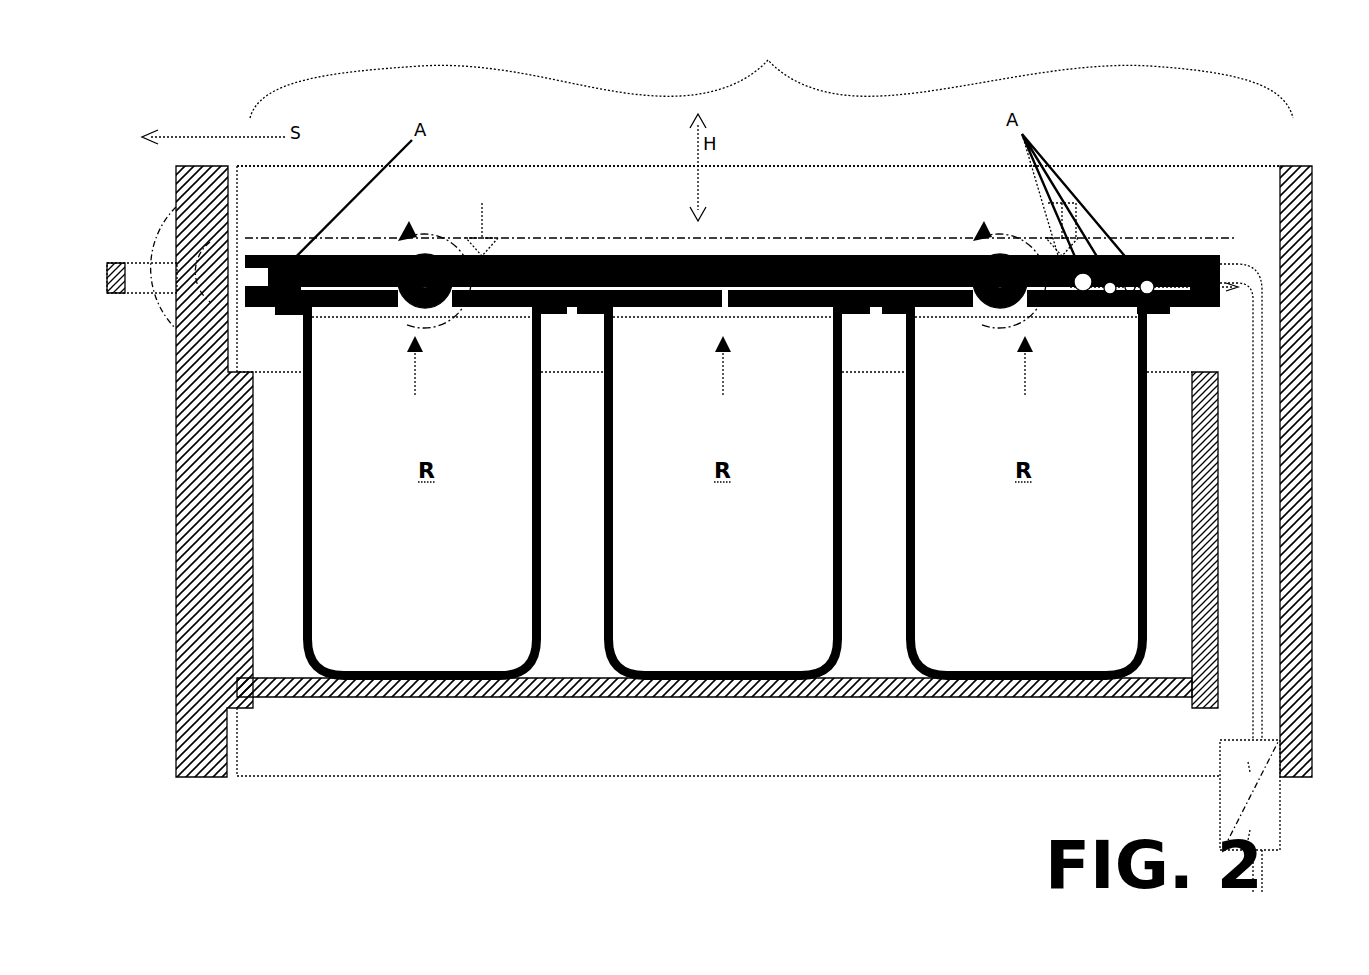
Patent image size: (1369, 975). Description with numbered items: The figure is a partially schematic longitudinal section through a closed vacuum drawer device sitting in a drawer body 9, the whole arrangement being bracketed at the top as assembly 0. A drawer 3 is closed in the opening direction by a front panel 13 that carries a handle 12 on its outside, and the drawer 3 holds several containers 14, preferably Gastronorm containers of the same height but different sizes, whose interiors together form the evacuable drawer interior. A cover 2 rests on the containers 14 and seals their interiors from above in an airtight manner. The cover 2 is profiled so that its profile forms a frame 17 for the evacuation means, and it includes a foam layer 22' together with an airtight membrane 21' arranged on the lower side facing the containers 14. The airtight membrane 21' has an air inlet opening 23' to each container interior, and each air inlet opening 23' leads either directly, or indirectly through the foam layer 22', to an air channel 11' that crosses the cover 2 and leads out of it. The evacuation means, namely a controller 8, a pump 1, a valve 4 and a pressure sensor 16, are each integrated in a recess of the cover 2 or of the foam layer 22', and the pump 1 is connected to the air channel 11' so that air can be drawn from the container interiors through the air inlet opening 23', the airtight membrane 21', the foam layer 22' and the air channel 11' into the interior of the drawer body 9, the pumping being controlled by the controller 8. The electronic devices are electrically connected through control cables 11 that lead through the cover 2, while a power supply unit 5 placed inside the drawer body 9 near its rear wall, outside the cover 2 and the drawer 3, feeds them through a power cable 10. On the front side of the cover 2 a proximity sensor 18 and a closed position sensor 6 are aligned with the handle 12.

The filling system 0 is at (771, 68).
The pump 1 is at (1155, 262).
The cover 2 is at (790, 262).
The drawer 3 is at (600, 690).
The valve 4 is at (1075, 296).
The power supply unit 5 is at (1220, 765).
The closed position sensor 6 is at (256, 308).
The controller 8 is at (1107, 284).
The drawer body 9 is at (1218, 165).
The power cable 10 is at (1277, 888).
The control cable 11 is at (869, 251).
The air channel 11' is at (879, 203).
The handle 12 is at (155, 265).
The front panel 13 is at (178, 466).
The containers 14 is at (532, 534).
The pressure sensor 16 is at (1130, 292).
The frame 17 is at (1237, 258).
The proximity sensor 18 is at (265, 268).
The airtight membrane 21' is at (587, 257).
The foam layer 22' is at (677, 247).
The air inlet opening 23' is at (850, 326).